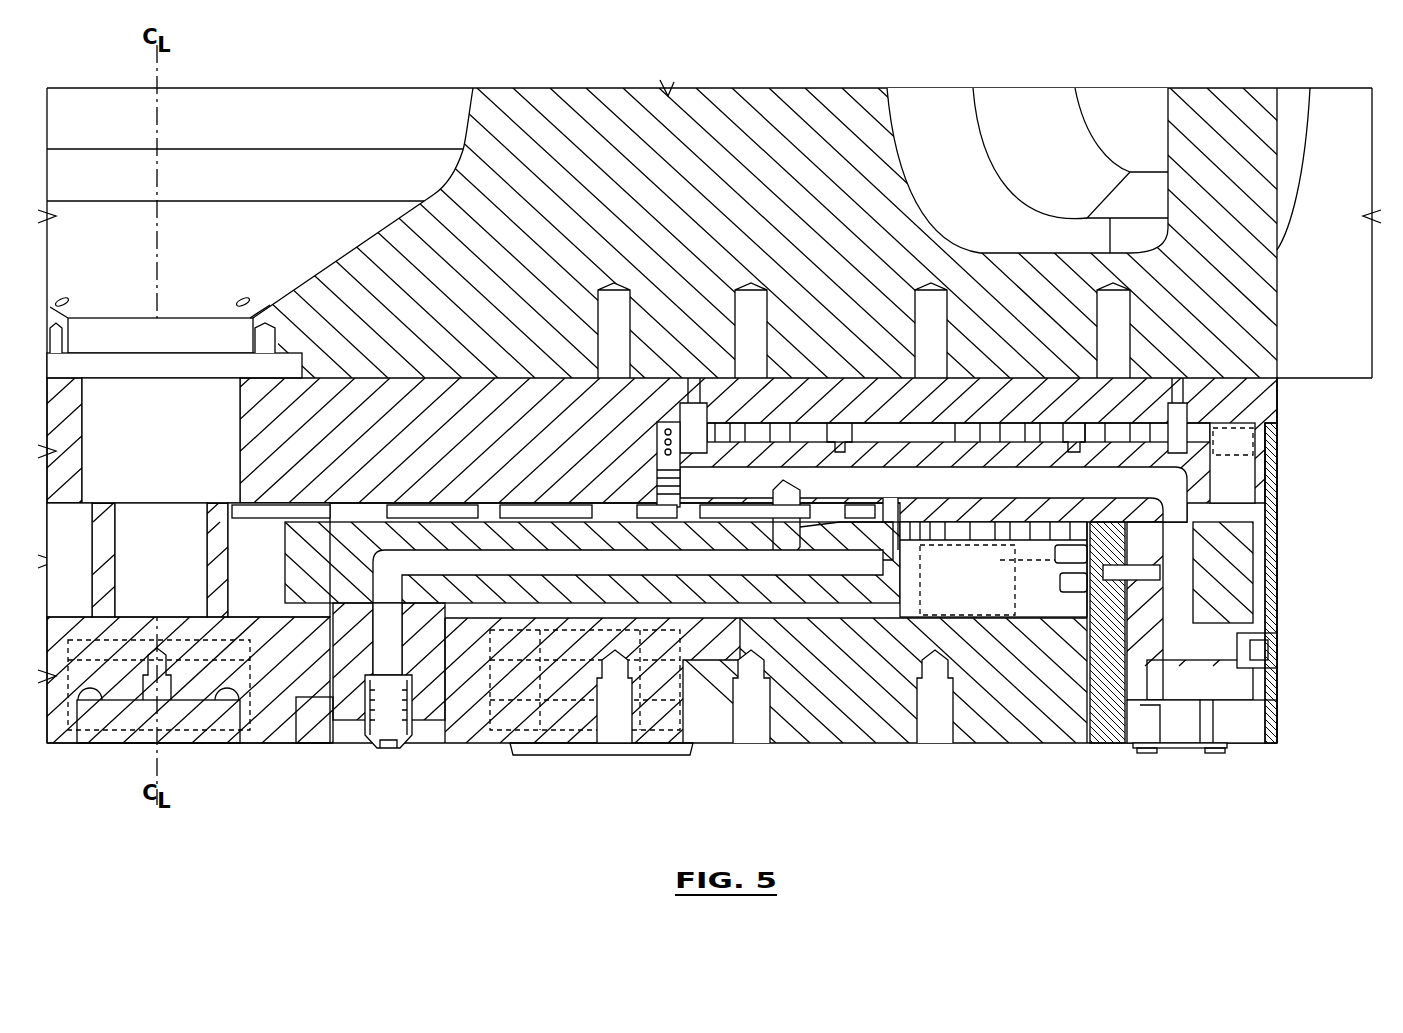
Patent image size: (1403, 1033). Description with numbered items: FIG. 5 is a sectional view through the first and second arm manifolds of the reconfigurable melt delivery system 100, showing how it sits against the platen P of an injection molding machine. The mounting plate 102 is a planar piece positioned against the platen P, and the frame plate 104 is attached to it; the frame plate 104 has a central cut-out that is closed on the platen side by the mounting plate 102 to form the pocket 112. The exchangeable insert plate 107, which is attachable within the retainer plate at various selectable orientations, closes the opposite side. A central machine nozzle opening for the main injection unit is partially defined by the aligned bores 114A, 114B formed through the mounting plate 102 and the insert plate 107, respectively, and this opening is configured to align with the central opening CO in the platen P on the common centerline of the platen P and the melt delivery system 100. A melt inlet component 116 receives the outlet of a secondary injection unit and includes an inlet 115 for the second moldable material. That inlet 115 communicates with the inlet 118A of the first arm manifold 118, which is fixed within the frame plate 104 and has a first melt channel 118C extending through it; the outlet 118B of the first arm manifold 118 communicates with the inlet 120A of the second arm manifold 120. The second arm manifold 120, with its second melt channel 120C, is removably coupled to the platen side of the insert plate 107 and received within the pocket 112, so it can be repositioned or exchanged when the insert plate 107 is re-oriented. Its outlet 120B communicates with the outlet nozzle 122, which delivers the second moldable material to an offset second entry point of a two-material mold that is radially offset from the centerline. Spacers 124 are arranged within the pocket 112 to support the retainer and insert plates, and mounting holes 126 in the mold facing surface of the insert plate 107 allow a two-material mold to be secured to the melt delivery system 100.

The platen P is at (722, 82).
The central opening CO is at (175, 300).
The reconfigurable melt delivery system 100 is at (1292, 546).
The mounting plate 102 is at (1282, 406).
The frame plate 104 is at (1292, 484).
The insert plate 107 is at (522, 744).
The pocket 112 is at (905, 602).
The bore 114A is at (161, 440).
The bore 114B is at (125, 680).
The inlet 115 is at (1280, 650).
The melt inlet component 116 is at (1185, 764).
The first arm manifold 118 is at (943, 484).
The inlet of the first arm manifold 118A is at (1215, 567).
The outlet of the first arm manifold 118B is at (752, 535).
The first melt channel 118C is at (988, 436).
The second arm manifold 120 is at (788, 622).
The inlet of the second arm manifold 120A is at (820, 544).
The outlet of the second arm manifold 120B is at (380, 612).
The second melt channel 120C is at (540, 575).
The outlet nozzle 122 is at (378, 754).
The spacers 124 is at (427, 425).
The mounting holes 126 is at (937, 720).